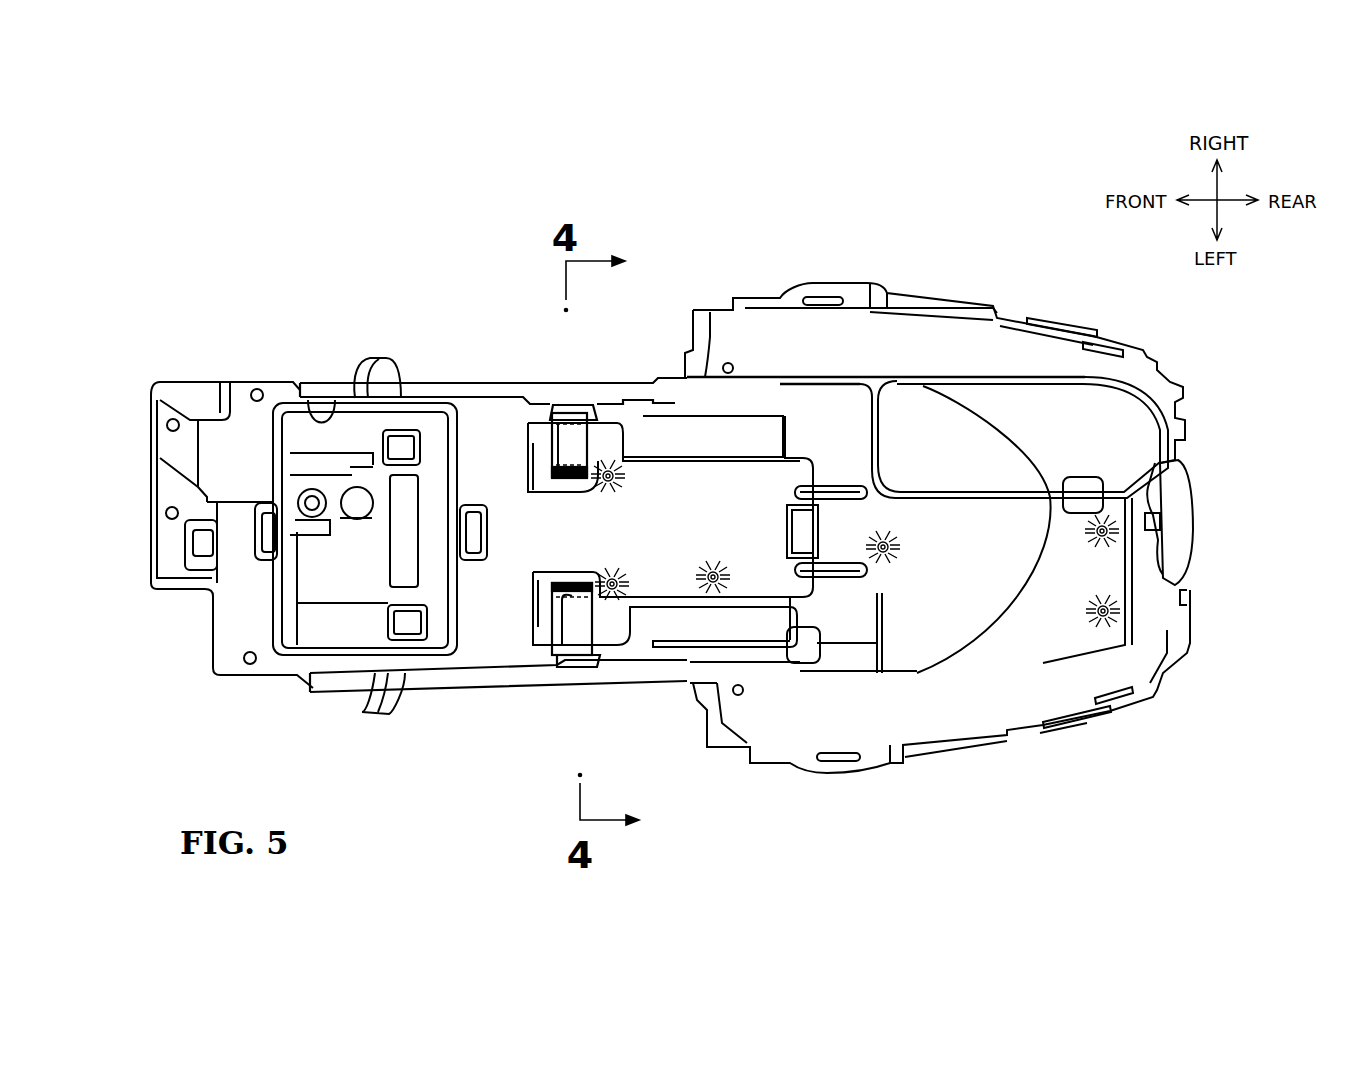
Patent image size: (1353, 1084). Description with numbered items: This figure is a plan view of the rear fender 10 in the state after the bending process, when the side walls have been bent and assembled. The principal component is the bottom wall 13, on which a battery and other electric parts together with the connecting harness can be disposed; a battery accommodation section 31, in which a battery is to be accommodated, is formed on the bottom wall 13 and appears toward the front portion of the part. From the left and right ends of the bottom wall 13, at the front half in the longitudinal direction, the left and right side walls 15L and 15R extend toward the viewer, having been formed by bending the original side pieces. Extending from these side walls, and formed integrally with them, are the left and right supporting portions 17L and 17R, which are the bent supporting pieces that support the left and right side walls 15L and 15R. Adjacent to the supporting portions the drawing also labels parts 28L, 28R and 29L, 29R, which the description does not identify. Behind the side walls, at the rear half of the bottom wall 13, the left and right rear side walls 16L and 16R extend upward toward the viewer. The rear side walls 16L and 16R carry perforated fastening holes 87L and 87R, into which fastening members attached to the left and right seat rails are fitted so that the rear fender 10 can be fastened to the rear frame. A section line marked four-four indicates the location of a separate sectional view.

The rear fender 10 is at (930, 272).
The bottom wall 13 is at (245, 617).
The right side wall 15R is at (458, 382).
The left side wall 15L is at (463, 682).
The right rear side wall 16R is at (1040, 320).
The left rear side wall 16L is at (1068, 727).
The right supporting portion 17R is at (558, 428).
The left supporting portion 17L is at (545, 645).
The right bracket 28R is at (530, 433).
The left bracket 28L is at (533, 612).
The right pin 29R is at (570, 465).
The left pin 29L is at (575, 603).
The battery accommodation section 31 is at (333, 425).
The right fastening hole 87R is at (1090, 340).
The left fastening hole 87L is at (1085, 718).